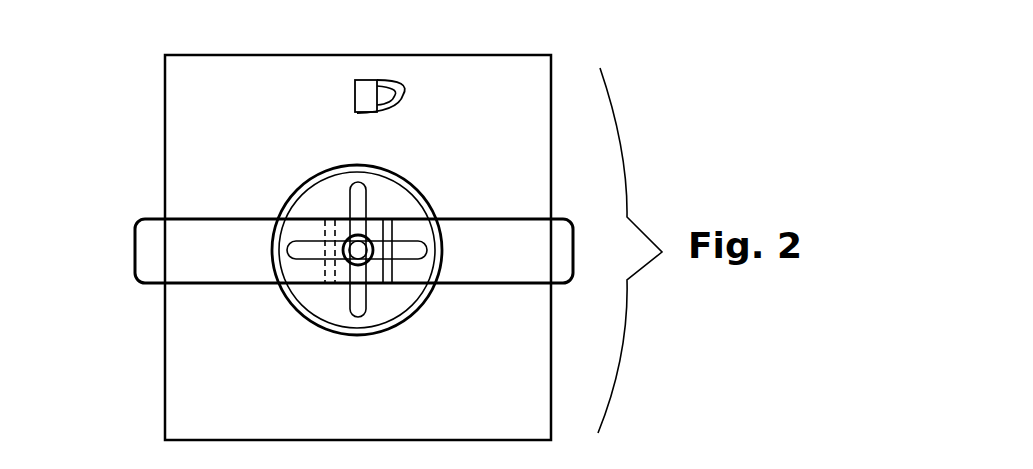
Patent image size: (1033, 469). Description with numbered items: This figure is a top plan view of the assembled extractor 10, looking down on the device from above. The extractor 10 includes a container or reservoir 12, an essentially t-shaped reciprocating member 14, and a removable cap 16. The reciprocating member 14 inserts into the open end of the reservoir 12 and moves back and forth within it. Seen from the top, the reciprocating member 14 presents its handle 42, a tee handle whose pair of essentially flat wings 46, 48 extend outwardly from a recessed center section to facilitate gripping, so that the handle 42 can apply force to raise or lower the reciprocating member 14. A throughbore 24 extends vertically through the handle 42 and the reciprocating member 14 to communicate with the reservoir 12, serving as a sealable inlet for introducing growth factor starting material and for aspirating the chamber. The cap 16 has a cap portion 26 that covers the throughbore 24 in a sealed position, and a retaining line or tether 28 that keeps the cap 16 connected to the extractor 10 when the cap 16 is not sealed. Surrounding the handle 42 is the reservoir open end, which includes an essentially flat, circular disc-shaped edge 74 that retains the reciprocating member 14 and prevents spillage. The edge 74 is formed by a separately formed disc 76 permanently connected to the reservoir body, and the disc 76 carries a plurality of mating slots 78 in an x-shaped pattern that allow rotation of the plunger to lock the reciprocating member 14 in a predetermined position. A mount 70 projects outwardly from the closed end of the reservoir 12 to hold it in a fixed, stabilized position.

The extractor 10 is at (128, 62).
The reservoir 12 is at (322, 306).
The reciprocating member 14 is at (135, 258).
The cap 16 is at (366, 92).
The throughbore 24 is at (374, 250).
The cap portion 26 is at (355, 92).
The tether 28 is at (397, 87).
The handle 42 is at (518, 284).
The wing 46 is at (167, 243).
The wing 48 is at (536, 226).
The mount 70 is at (215, 190).
The edge 74 is at (350, 320).
The disc 76 is at (322, 293).
The mating slots 78 is at (374, 251).